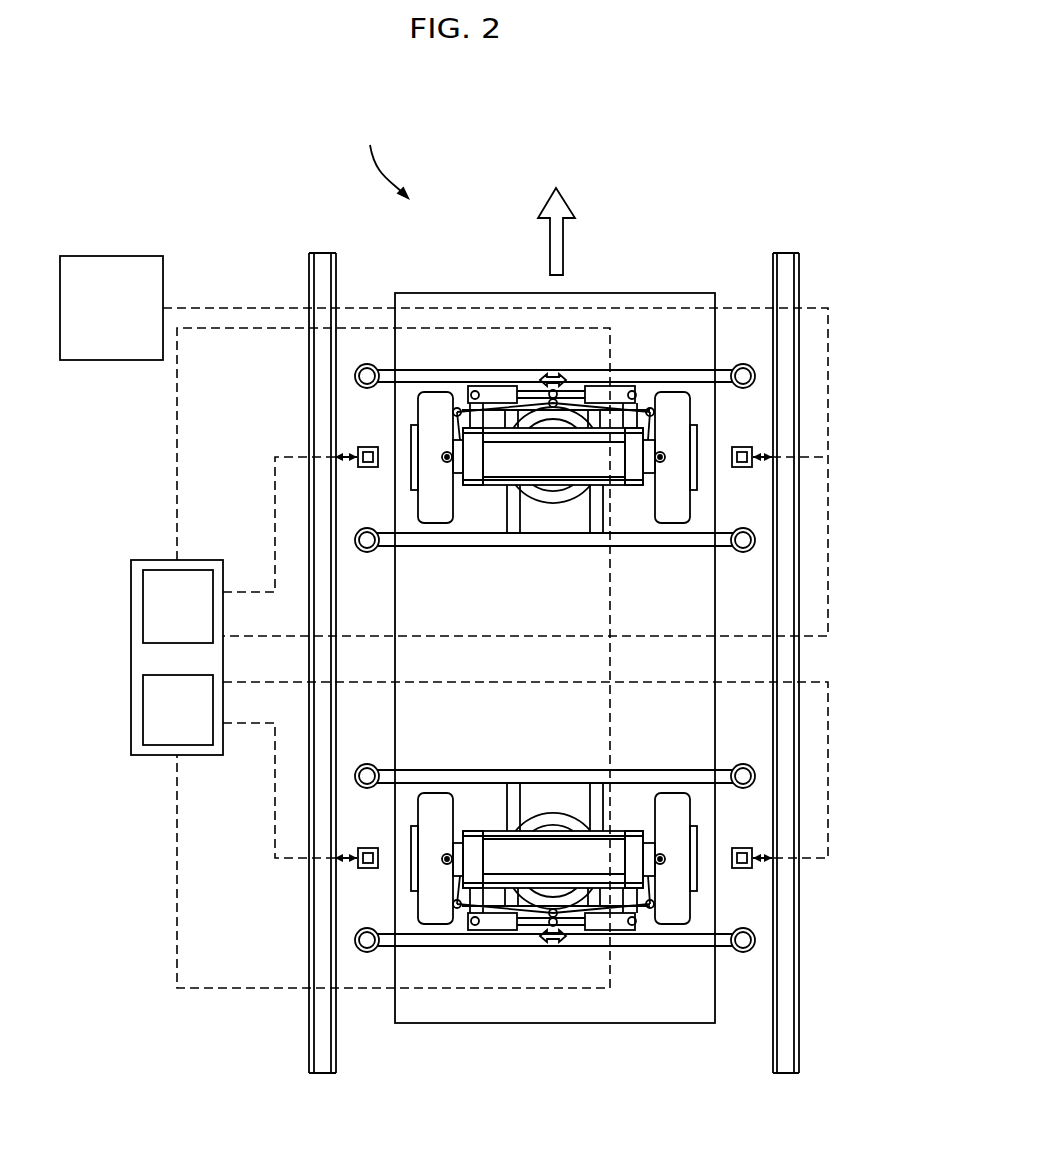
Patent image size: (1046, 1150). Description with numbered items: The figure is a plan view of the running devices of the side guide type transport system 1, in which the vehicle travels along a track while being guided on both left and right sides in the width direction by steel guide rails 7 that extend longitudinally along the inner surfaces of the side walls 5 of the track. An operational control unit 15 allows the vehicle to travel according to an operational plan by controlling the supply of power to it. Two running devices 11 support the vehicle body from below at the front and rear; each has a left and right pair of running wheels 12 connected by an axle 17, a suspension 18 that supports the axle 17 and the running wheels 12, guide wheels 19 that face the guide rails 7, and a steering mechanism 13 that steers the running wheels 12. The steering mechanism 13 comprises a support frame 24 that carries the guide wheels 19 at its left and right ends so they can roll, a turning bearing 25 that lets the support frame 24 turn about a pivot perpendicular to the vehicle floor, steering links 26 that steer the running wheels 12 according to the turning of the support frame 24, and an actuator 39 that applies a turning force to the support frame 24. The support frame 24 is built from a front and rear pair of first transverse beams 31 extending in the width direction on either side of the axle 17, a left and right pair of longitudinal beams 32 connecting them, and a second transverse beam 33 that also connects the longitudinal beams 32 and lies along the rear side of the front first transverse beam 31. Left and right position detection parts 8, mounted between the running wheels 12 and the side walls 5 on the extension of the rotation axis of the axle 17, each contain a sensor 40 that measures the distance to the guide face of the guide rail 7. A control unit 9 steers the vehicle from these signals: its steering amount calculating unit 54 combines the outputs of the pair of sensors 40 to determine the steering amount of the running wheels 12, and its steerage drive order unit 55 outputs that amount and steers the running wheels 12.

The transport system 1 is at (384, 155).
The side walls 5 is at (554, 663).
The guide rails 7 is at (322, 283).
The position detection parts 8 is at (545, 654).
The sensor 40 is at (362, 445).
The control unit 9 is at (146, 660).
The running devices 11 is at (730, 422).
The running wheels 12 is at (430, 505).
The steering mechanism 13 is at (528, 355).
The operational control unit 15 is at (116, 256).
The axle 17 is at (515, 458).
The suspension 18 is at (635, 477).
The guide wheels 19 is at (743, 364).
The support frame 24 is at (645, 370).
The turning bearing 25 is at (558, 500).
The steering links 26 is at (462, 385).
The first transverse beams 31 is at (415, 370).
The longitudinal beams 32 is at (514, 522).
The second transverse beam 33 is at (578, 400).
The actuator 39 is at (493, 390).
The steering amount calculating unit 54 is at (157, 578).
The steerage drive order unit 55 is at (157, 740).